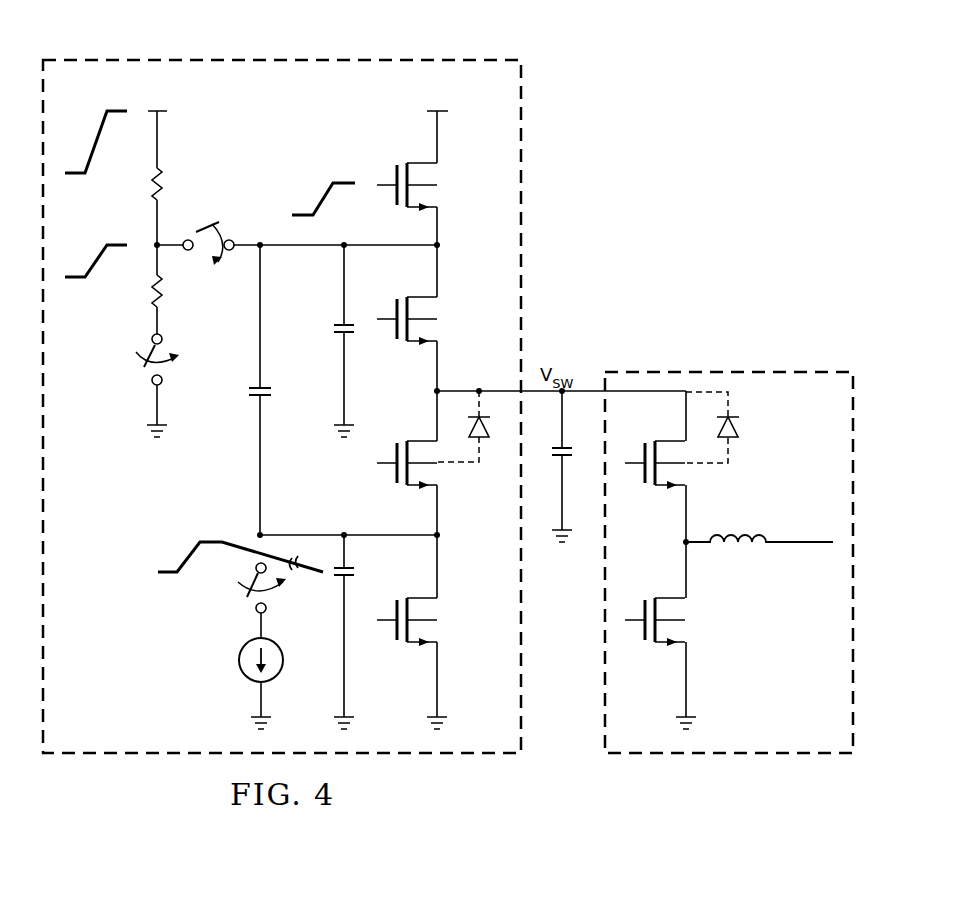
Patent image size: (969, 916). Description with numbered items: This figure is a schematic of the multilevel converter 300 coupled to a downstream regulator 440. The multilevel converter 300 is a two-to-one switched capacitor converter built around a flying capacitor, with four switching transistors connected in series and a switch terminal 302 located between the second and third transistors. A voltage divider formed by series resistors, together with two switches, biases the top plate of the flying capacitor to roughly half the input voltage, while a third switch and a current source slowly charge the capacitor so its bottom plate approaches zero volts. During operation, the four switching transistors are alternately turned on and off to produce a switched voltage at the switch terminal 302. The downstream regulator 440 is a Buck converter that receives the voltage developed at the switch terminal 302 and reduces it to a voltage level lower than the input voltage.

The multilevel converter 300 is at (117, 57).
The switch terminal 302 is at (441, 387).
The downstream regulator 440 is at (757, 758).